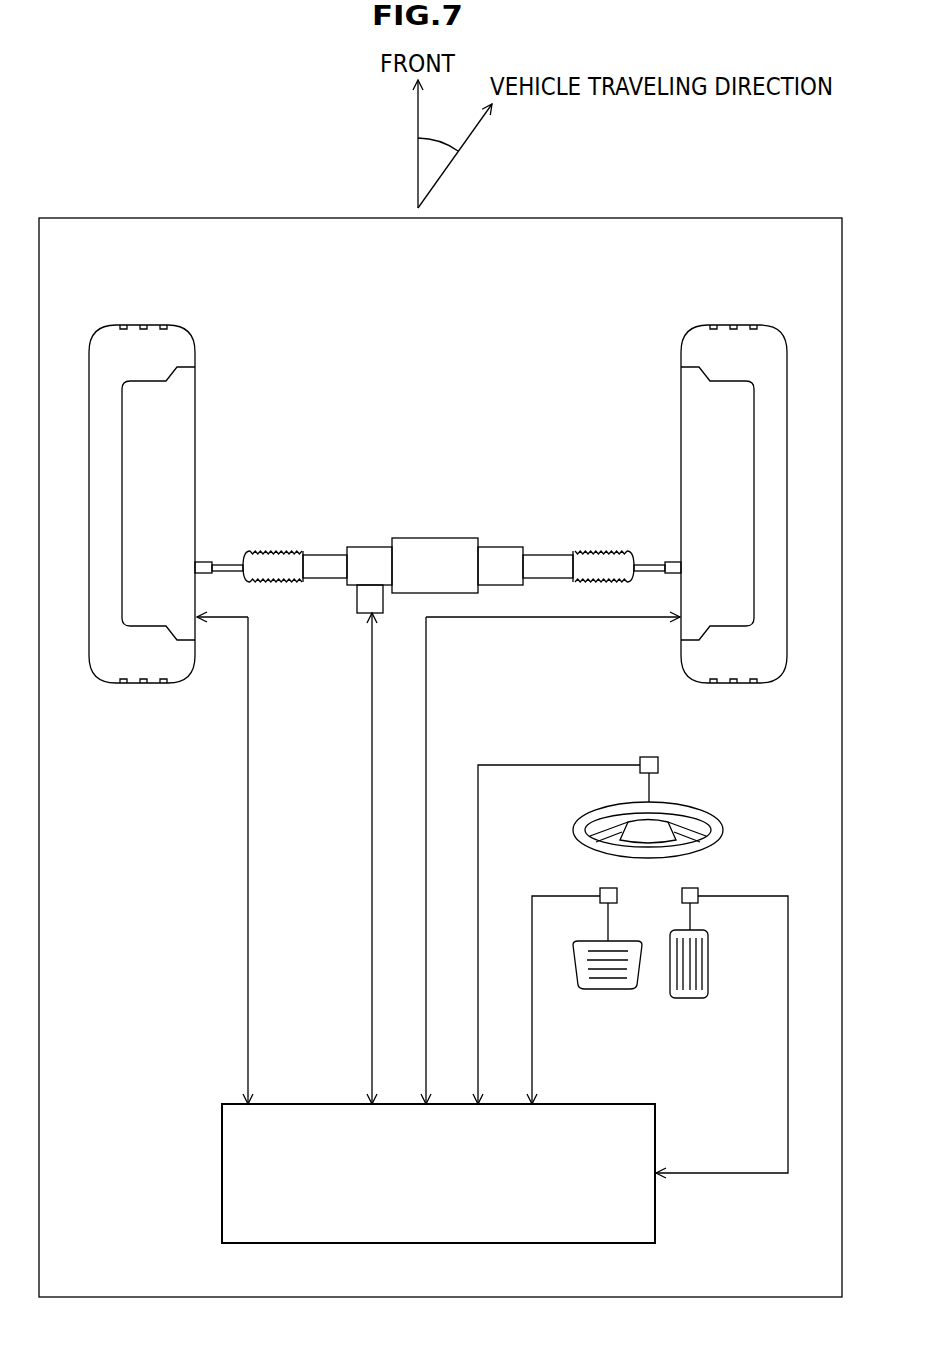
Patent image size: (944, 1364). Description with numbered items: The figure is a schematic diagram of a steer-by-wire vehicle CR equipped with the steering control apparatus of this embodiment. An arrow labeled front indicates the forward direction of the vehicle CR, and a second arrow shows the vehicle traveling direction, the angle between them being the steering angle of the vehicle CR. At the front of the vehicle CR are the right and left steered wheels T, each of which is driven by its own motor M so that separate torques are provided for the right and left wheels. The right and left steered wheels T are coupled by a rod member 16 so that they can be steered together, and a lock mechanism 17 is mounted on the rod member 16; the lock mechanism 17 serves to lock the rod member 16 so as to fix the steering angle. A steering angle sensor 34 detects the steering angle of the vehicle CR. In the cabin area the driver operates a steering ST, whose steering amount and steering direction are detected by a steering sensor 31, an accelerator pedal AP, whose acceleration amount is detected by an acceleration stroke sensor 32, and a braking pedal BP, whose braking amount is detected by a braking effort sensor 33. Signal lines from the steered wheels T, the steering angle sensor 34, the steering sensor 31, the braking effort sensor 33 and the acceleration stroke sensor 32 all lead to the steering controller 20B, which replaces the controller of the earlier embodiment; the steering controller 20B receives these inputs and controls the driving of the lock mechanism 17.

The steered wheel T is at (139, 315).
The motor M is at (170, 448).
The rod member 16 is at (473, 512).
The lock mechanism 17 is at (432, 552).
The steering angle sensor 34 is at (358, 598).
The steering sensor 31 is at (659, 765).
The steering ST is at (700, 808).
The braking effort sensor 33 is at (603, 888).
The acceleration stroke sensor 32 is at (697, 888).
The braking pedal BP is at (608, 990).
The accelerator pedal AP is at (688, 1000).
The steering controller 20B is at (222, 1177).
The vehicle CR is at (550, 206).